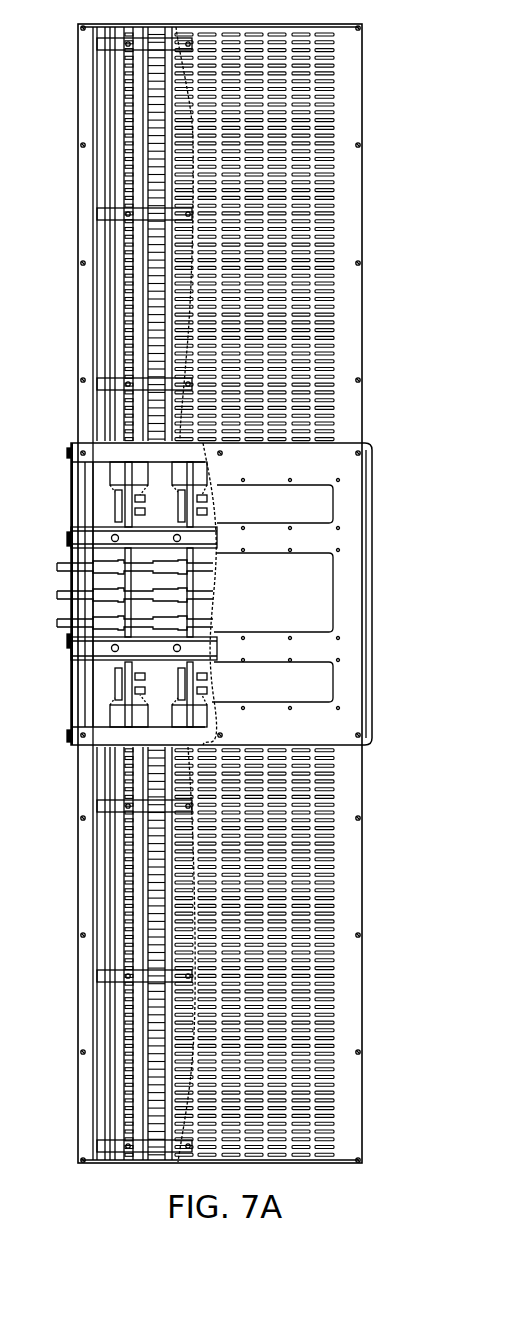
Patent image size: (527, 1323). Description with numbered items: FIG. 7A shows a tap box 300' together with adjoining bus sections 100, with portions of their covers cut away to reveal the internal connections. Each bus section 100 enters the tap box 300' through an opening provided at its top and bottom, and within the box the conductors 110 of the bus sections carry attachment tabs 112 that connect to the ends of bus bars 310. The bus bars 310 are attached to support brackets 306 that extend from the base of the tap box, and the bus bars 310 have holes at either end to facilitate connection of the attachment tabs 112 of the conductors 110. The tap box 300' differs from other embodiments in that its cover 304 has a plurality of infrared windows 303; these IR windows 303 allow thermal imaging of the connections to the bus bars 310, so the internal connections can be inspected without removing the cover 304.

The bus section 100 is at (370, 836).
The conductor 110 is at (118, 407).
The attachment tab 112 is at (113, 487).
The tap box 300' is at (258, 573).
The infrared (IR) window 303 is at (315, 508).
The cover 304 is at (365, 556).
The support bracket 306 is at (100, 538).
The bus bar 310 is at (93, 578).